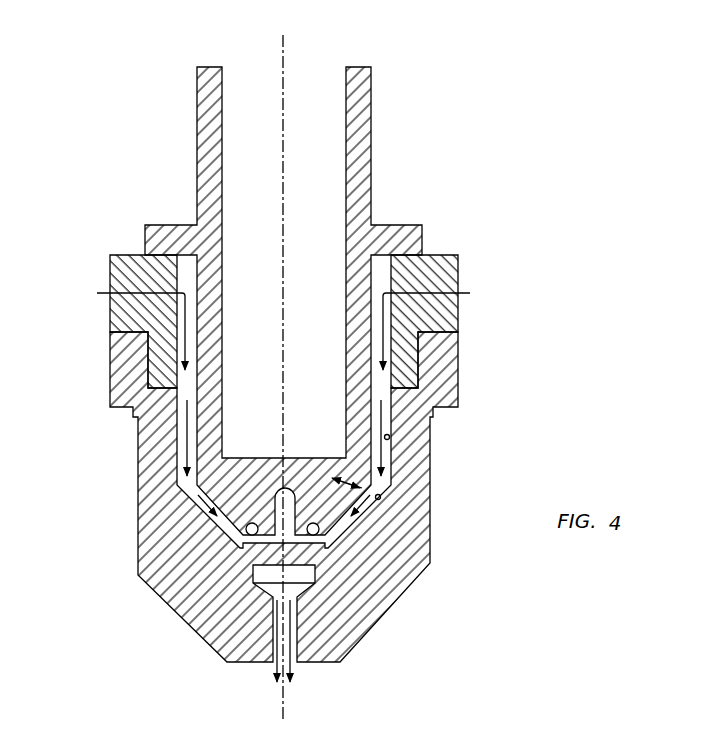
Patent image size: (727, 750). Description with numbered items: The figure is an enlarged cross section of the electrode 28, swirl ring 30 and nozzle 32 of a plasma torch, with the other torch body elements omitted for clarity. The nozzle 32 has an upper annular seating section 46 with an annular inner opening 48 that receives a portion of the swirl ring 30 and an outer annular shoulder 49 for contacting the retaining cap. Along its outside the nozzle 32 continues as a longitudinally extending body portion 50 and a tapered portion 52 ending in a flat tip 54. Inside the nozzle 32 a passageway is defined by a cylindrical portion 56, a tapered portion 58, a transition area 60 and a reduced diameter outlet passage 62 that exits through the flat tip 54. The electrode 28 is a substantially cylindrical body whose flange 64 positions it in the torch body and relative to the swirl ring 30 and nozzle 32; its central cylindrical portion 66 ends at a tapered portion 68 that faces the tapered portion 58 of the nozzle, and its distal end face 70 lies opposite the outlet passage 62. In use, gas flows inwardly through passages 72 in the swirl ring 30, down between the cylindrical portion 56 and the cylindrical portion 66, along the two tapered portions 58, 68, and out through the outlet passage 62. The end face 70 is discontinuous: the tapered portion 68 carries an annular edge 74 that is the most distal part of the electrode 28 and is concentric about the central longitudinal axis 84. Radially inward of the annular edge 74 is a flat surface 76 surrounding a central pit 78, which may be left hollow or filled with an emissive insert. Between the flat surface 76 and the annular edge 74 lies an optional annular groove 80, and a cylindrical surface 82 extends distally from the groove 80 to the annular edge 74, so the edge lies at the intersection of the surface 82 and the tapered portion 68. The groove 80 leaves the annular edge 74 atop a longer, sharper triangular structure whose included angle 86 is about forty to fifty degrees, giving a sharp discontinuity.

The electrode 28 is at (373, 152).
The swirl ring 30 is at (322, 298).
The nozzle 32 is at (461, 357).
The upper annular seating section 46 is at (458, 341).
The annular inner opening 48 is at (416, 366).
The outer annular shoulder 49 is at (452, 409).
The longitudinally extending body portion 50 is at (331, 508).
The tapered portion 52 is at (357, 646).
The flat tip 54 is at (315, 663).
The cylindrical portion 56 is at (392, 437).
The tapered portion 58 is at (381, 498).
The transition area 60 is at (224, 630).
The reduced diameter outlet passage 62 is at (283, 636).
The flange 64 is at (426, 232).
The central cylindrical portion 66 is at (372, 413).
The tapered portion 68 is at (328, 545).
The distal end face 70 is at (297, 598).
The passages 72 is at (437, 283).
The annular edge 74 is at (254, 572).
The flat surface 76 is at (300, 572).
The central pit 78 is at (278, 504).
The annular groove 80 is at (314, 520).
The cylindrical surface 82 is at (255, 524).
The longitudinal axis 84 is at (286, 58).
The included angle 86 is at (393, 456).